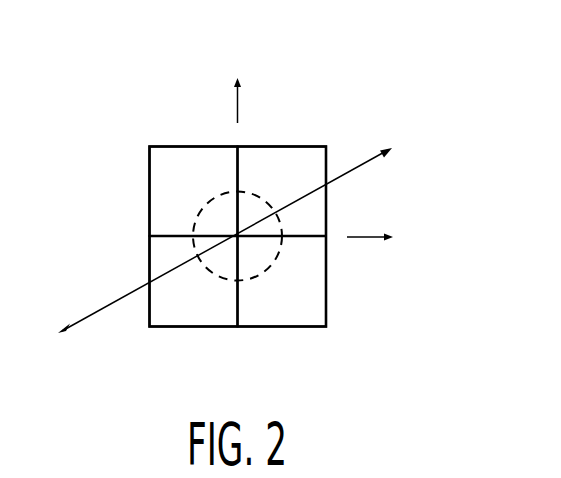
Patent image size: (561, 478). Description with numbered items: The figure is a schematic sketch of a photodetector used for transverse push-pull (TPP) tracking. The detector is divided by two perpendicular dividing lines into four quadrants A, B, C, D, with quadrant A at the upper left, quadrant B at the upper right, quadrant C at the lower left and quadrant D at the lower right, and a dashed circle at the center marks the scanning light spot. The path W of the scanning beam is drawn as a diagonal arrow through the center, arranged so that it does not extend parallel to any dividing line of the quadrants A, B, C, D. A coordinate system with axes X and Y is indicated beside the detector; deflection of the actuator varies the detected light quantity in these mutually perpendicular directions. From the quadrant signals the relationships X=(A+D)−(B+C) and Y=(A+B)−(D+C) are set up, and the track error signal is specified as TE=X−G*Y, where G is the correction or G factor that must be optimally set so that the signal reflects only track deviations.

The quadrant A is at (194, 192).
The quadrant B is at (282, 192).
The quadrant C is at (194, 281).
The quadrant D is at (282, 281).
The path of the scanning beam W is at (225, 223).
The coordinate axis X is at (381, 239).
The coordinate axis Y is at (245, 89).